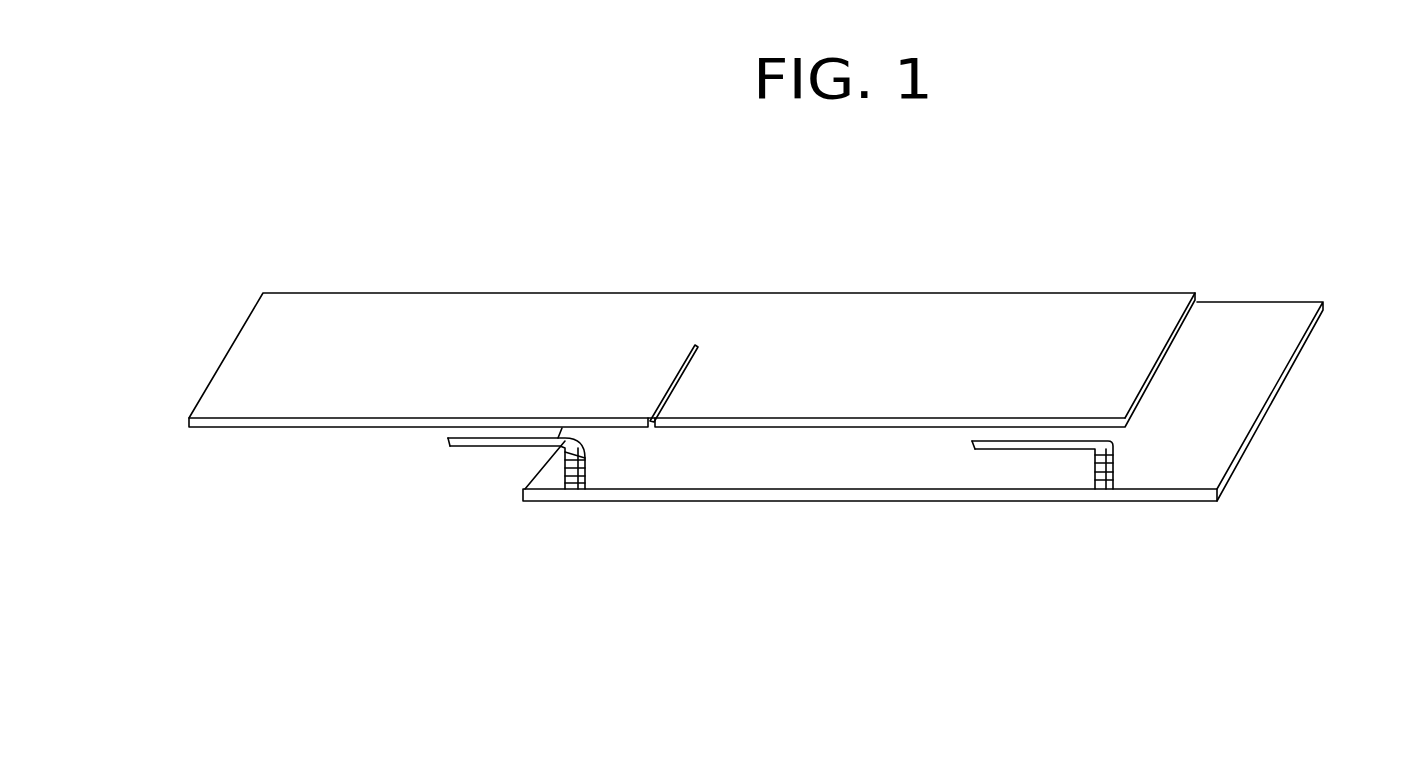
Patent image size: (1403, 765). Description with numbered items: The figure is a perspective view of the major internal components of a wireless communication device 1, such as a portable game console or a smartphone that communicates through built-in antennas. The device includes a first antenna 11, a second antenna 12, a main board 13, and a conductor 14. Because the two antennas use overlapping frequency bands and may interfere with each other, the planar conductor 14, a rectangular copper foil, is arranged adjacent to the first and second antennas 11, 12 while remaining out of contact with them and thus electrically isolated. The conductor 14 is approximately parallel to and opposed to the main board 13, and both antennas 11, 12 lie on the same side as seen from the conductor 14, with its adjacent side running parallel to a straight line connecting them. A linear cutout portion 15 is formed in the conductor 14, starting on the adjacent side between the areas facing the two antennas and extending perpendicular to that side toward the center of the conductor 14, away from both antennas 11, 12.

The wireless communication device 1 is at (910, 597).
The first antenna 11 is at (1053, 450).
The second antenna 12 is at (487, 448).
The main board 13 is at (1273, 402).
The conductor 14 is at (1098, 293).
The cutout portion 15 is at (693, 345).